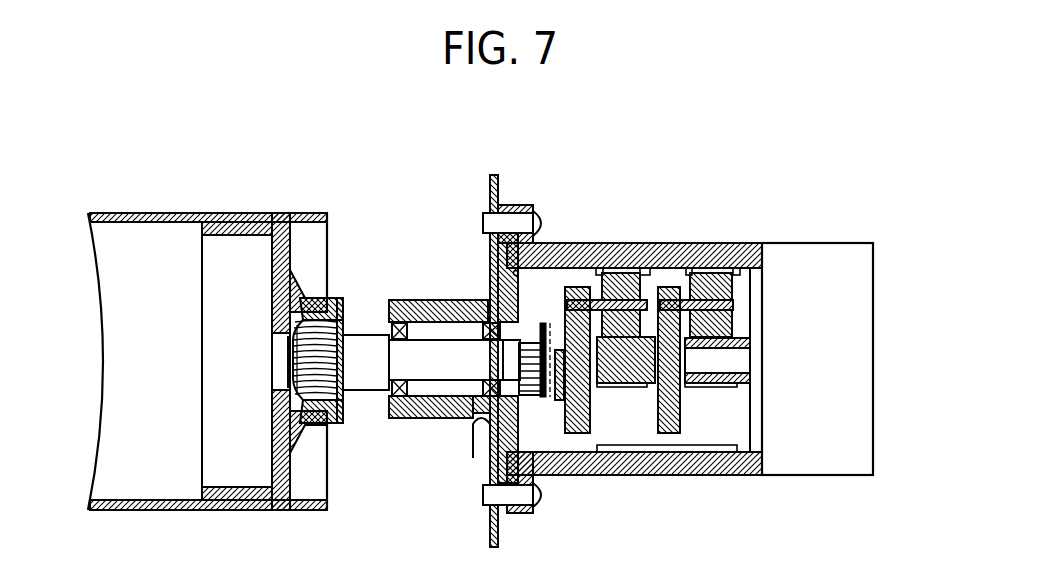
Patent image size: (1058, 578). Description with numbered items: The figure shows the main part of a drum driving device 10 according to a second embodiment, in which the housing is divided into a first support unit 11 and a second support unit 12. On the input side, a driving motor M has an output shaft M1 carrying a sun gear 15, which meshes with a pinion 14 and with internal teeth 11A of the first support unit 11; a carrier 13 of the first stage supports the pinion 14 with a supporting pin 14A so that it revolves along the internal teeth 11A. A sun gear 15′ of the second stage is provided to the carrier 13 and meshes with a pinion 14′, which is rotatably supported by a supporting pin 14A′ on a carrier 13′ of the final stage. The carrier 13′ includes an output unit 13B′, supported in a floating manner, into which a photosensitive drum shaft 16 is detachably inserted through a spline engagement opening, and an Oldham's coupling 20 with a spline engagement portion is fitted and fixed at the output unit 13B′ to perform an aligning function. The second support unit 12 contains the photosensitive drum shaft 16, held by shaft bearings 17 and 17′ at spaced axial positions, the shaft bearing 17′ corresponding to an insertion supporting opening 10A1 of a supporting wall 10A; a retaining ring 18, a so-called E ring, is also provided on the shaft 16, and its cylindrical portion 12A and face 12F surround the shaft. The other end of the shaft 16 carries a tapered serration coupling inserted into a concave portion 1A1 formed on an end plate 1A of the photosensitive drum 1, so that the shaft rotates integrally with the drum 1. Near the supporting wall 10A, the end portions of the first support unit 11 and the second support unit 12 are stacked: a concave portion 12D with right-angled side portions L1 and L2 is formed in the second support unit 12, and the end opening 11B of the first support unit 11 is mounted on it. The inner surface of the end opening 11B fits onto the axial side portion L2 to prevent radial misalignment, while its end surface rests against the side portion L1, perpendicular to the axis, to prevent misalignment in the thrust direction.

The photosensitive drum 1 is at (160, 212).
The end plate 1A is at (282, 222).
The concave portion 1A1 is at (314, 316).
The drum driving device 10 is at (678, 151).
The supporting wall 10A is at (490, 532).
The insertion supporting opening 10A1 is at (487, 412).
The first support unit 11 is at (584, 243).
The internal teeth 11A is at (676, 268).
The end opening 11B is at (517, 452).
The second support unit 12 is at (404, 300).
The cylindrical portion 12A is at (428, 304).
The concave portion 12D is at (513, 255).
The flange face 12F is at (498, 280).
The carrier 13 is at (680, 426).
The carrier 13′ is at (592, 426).
The output unit 13B′ is at (558, 372).
The pinion 14 is at (700, 290).
The pinion 14′ is at (607, 298).
The supporting pin 14A is at (722, 300).
The supporting pin 14A′ is at (630, 310).
The sun gear 15 is at (728, 387).
The sun gear 15′ is at (640, 387).
The photosensitive drum shaft 16 is at (425, 376).
The shaft bearing 17 is at (390, 388).
The shaft bearing 17′ is at (486, 396).
The retaining ring 18 is at (506, 352).
The Oldham's coupling 20 is at (510, 384).
The side portion L1 is at (497, 240).
The side portion L2 is at (519, 276).
The driving motor M is at (876, 278).
The output shaft M1 is at (750, 353).